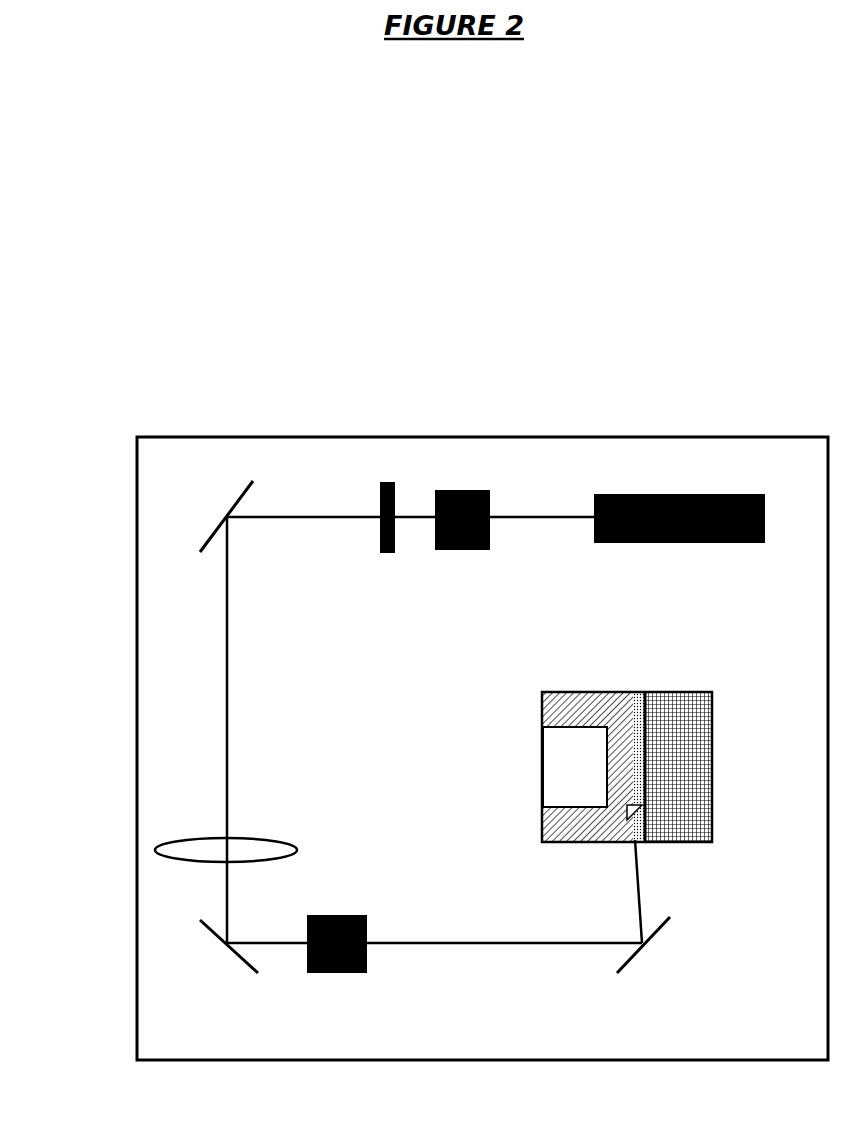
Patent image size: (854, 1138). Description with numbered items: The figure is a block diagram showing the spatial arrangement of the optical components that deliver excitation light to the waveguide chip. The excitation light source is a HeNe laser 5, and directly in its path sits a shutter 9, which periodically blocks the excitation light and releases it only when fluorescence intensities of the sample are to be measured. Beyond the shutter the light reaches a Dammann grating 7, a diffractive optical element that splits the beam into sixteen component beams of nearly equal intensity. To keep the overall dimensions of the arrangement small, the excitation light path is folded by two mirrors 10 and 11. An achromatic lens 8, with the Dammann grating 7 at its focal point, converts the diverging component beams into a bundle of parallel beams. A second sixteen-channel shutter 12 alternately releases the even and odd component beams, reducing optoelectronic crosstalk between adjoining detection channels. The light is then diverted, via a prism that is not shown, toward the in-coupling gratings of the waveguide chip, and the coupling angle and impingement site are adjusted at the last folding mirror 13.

The HeNe laser 5 is at (710, 495).
The Dammann grating 7 is at (390, 480).
The achromatic lens 8 is at (197, 855).
The shutter 9 is at (475, 490).
The mirror 10 is at (213, 522).
The mirror 11 is at (210, 947).
The second 16-channel shutter 12 is at (347, 975).
The last folding mirror 13 is at (648, 965).